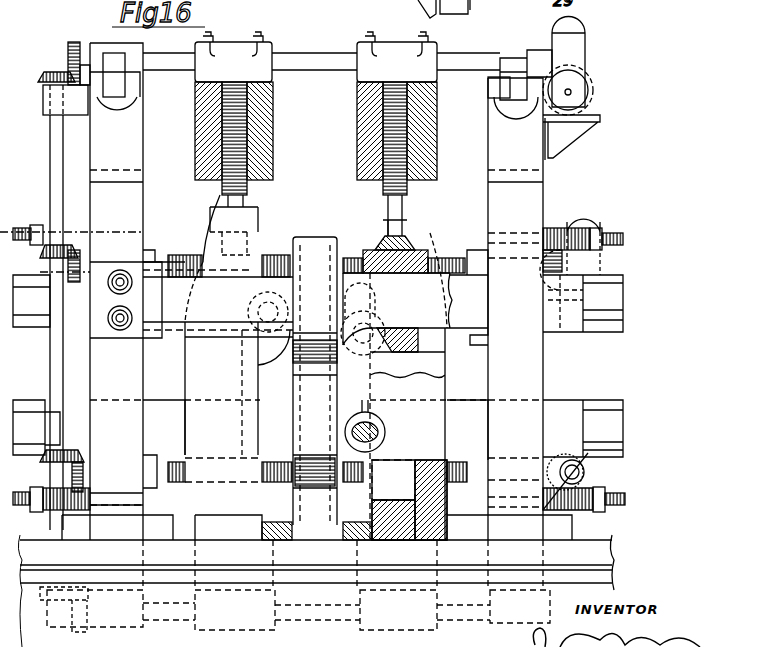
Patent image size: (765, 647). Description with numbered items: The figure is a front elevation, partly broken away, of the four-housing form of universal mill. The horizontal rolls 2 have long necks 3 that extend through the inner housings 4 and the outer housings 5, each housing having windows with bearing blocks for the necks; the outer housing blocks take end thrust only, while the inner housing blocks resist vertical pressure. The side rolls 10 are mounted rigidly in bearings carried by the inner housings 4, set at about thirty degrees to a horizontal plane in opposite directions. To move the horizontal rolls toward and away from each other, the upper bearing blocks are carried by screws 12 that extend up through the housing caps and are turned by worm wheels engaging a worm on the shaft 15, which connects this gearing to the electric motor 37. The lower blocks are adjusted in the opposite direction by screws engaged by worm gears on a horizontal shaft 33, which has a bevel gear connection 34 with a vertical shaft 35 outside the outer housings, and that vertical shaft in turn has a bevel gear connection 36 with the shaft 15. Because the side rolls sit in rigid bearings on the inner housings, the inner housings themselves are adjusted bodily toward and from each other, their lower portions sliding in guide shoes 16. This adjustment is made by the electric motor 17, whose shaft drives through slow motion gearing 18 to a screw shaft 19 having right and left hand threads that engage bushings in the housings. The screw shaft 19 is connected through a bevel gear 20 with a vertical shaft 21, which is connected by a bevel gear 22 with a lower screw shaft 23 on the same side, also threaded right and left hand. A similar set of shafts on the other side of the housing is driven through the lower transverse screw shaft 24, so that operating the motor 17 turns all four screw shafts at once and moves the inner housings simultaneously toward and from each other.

The horizontal roll 2 is at (316, 240).
The long neck 3 is at (248, 434).
The inner housing 4 is at (336, 367).
The outer housing 5 is at (316, 291).
The side roll 10 is at (390, 365).
The screw 12 is at (426, 192).
The shaft 15 is at (466, 62).
The guide shoe 16 is at (605, 552).
The electric motor 17 is at (598, 250).
The slow motion gearing 18 is at (552, 228).
The screw shaft 19 is at (438, 256).
The bevel gear 20 is at (66, 264).
The vertical shaft 21 is at (52, 352).
The bevel gear 22 is at (70, 472).
The screw shaft 23 is at (284, 262).
The lower transverse screw shaft 24 is at (283, 482).
The horizontal shaft 33 is at (178, 622).
The bevel gear connection 34 is at (70, 598).
The vertical shaft 35 is at (56, 510).
The bevel gear connection 36 is at (55, 72).
The electric motor 37 is at (592, 90).